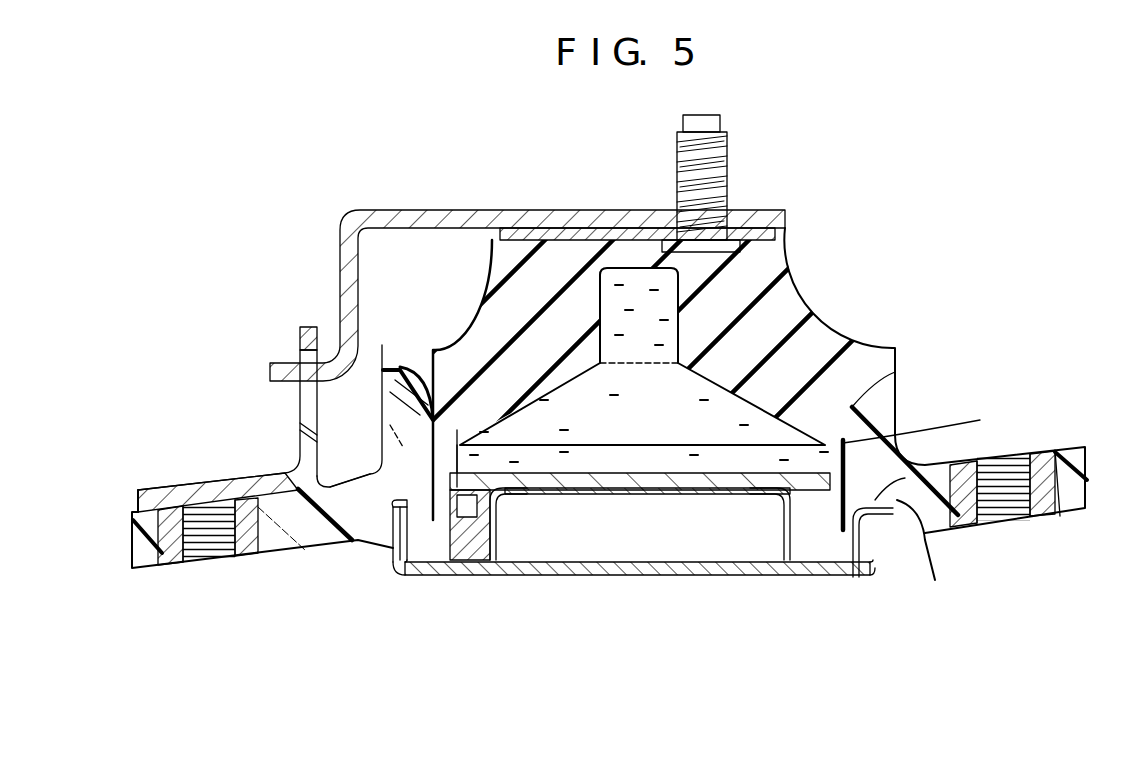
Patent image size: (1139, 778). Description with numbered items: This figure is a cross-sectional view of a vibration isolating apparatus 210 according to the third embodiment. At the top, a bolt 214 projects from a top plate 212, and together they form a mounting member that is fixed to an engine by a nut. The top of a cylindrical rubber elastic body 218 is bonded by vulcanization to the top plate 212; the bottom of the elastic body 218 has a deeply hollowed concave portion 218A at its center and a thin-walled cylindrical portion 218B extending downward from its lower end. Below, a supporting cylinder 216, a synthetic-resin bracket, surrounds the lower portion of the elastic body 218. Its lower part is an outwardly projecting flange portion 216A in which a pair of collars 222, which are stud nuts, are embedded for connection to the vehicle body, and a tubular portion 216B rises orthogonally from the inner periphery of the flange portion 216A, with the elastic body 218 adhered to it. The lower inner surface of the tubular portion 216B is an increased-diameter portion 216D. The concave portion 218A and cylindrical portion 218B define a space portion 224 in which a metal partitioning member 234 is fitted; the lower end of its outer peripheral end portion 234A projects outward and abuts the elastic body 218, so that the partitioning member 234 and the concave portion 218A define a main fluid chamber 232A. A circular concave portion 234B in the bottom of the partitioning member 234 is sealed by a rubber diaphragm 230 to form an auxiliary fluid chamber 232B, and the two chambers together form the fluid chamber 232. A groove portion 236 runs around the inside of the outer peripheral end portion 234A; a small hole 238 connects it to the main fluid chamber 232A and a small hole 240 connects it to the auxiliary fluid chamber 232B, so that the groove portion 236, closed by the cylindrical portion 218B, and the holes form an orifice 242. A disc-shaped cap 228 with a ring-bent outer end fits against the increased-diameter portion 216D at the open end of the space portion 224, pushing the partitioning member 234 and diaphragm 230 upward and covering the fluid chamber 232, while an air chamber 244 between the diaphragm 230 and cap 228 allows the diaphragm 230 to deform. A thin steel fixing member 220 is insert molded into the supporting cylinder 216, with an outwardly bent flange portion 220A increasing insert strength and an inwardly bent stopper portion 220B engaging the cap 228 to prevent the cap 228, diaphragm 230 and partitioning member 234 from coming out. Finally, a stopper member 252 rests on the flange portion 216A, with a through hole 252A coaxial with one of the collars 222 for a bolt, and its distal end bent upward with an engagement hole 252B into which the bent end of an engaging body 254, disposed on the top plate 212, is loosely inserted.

The vibration isolating apparatus 210 is at (860, 142).
The top plate 212 is at (770, 212).
The bolt 214 is at (727, 160).
The supporting cylinder 216 is at (927, 547).
The flange portion 216A is at (1090, 448).
The tubular portion 216B is at (883, 398).
The increased-diameter portion 216D is at (420, 565).
The elastic body 218 is at (452, 325).
The concave portion 218A is at (712, 383).
The cylindrical portion 218B is at (420, 375).
The fixing member 220 is at (398, 572).
The flange portion 220A is at (373, 545).
The stopper portion 220B is at (430, 577).
The collars 222 is at (262, 553).
The space portion 224 is at (953, 426).
The cap 228 is at (593, 577).
The diaphragm 230 is at (713, 494).
The fluid chamber 232 is at (645, 474).
The main fluid chamber 232A is at (645, 428).
The auxiliary fluid chamber 232B is at (585, 531).
The partitioning member 234 is at (775, 437).
The outer peripheral end portion 234A is at (847, 572).
The concave portion 234B is at (520, 573).
The groove portion 236 is at (430, 527).
The small hole 238 is at (480, 487).
The small hole 240 is at (823, 503).
The orifice 242 is at (920, 458).
The air chamber 244 is at (662, 547).
The stopper member 252 is at (297, 473).
The through hole 252A is at (178, 487).
The engagement hole 252B is at (300, 417).
The engaging body 254 is at (500, 213).